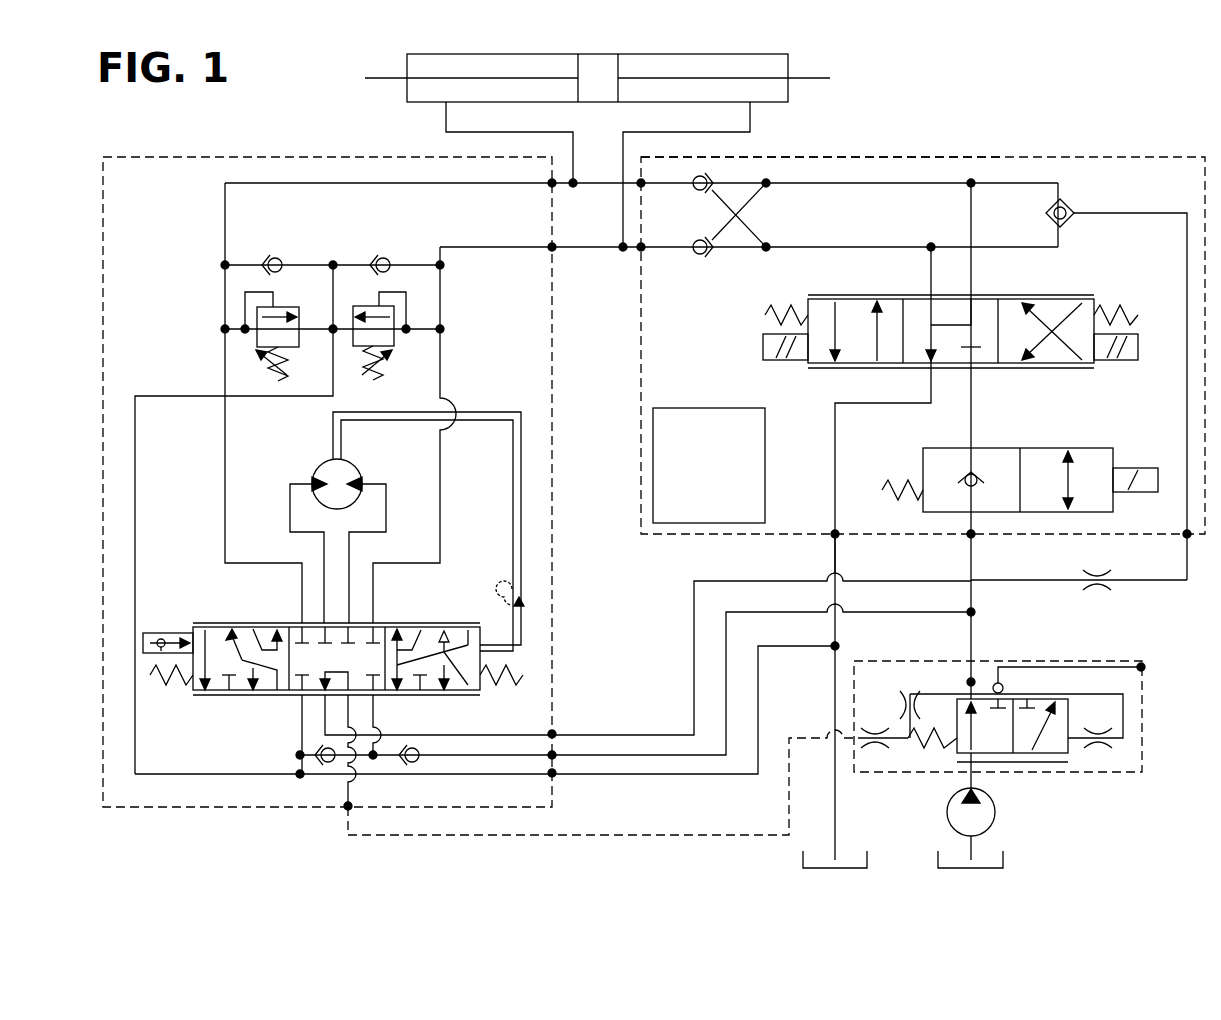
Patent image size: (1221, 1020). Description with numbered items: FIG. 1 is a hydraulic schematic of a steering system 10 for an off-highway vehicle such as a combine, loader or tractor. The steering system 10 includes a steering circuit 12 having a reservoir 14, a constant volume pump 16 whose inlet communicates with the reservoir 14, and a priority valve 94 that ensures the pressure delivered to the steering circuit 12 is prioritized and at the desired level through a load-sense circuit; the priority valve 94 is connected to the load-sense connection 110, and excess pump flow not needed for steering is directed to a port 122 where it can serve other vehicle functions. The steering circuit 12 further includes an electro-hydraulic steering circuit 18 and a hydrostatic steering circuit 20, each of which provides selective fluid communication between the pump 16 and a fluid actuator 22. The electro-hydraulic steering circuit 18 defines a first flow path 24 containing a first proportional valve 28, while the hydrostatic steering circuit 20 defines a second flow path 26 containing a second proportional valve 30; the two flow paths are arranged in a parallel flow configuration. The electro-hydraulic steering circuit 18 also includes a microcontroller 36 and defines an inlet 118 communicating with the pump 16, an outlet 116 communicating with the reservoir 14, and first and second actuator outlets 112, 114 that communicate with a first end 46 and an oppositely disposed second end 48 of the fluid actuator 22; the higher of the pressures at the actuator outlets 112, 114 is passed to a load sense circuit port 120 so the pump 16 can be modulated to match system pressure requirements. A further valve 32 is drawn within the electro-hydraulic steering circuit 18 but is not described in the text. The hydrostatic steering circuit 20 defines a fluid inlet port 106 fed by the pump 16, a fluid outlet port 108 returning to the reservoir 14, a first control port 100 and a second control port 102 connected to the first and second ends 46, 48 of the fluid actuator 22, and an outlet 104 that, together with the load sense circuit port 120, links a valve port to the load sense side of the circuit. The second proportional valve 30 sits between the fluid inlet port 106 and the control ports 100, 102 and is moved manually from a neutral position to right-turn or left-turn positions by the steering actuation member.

The steering system 10 is at (314, 84).
The steering circuit 12 is at (914, 141).
The reservoir 14 is at (867, 860).
The pump 16 is at (995, 818).
The electro-hydraulic steering circuit 18 is at (1084, 157).
The hydrostatic steering circuit 20 is at (152, 157).
The fluid actuator 22 is at (398, 63).
The first flow path 24 is at (990, 393).
The second flow path 26 is at (282, 738).
The first proportional valve 28 is at (858, 297).
The second proportional valve 30 is at (233, 623).
The load holding valve 32 is at (1100, 447).
The microcontroller 36 is at (722, 478).
The first end 46 is at (407, 94).
The second end 48 is at (788, 93).
The priority valve 94 is at (1080, 773).
The first control port 100 is at (552, 186).
The second control port 102 is at (552, 250).
The outlet 104 is at (552, 731).
The fluid inlet port 106 is at (552, 752).
The fluid outlet port 108 is at (552, 776).
The load-sense connection 110 is at (348, 808).
The first actuator outlet 112 is at (638, 190).
The second actuator outlet 114 is at (638, 255).
The outlet 116 is at (835, 537).
The inlet 118 is at (971, 537).
The load sense circuit port 120 is at (1187, 537).
The port 122 is at (1141, 667).